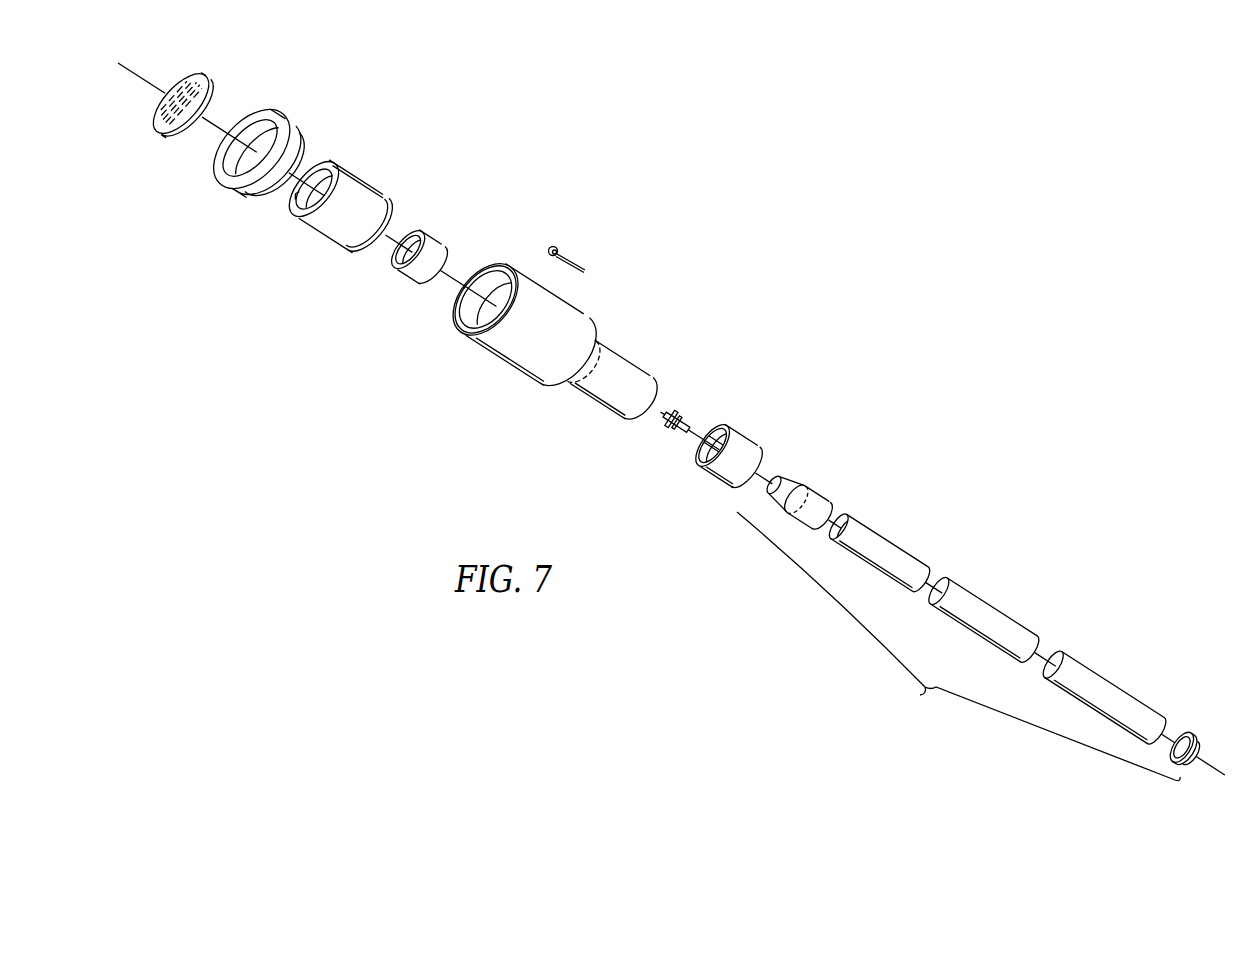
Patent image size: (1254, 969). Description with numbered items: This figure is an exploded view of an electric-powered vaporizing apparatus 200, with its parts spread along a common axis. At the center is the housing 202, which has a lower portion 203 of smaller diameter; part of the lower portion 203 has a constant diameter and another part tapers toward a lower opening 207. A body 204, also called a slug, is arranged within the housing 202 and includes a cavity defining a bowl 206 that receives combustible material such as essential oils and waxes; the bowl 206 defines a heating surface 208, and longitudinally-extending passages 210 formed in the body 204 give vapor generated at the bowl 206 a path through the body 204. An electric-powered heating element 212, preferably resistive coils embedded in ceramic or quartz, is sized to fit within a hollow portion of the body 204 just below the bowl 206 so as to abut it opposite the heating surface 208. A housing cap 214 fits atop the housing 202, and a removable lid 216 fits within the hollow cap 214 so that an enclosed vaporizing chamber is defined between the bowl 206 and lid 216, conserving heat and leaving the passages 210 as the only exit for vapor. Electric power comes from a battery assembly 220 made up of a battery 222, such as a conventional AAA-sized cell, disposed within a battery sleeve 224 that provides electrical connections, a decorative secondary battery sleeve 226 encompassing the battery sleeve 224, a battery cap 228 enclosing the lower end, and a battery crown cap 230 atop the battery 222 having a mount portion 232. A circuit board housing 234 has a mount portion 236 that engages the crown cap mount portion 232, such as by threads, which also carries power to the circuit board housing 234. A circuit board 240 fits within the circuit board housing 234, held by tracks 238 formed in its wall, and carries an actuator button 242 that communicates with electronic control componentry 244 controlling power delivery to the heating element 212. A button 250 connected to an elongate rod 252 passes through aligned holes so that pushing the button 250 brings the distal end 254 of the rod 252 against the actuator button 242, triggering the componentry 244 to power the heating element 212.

The vaporizing apparatus 200 is at (896, 260).
The housing 202 is at (542, 361).
The lower portion 203 is at (492, 354).
The body 204 is at (327, 193).
The bowl 206 is at (311, 203).
The lower opening 207 is at (646, 425).
The heating surface 208 is at (333, 177).
The passages 210 is at (297, 204).
The heating element 212 is at (440, 245).
The housing cap 214 is at (284, 120).
The lid 216 is at (206, 79).
The battery assembly 220 is at (976, 645).
The battery 222 is at (894, 550).
The battery sleeve 224 is at (985, 609).
The secondary battery sleeve 226 is at (1103, 682).
The battery cap 228 is at (1200, 745).
The battery crown cap 230 is at (818, 485).
The mount portion 232 is at (781, 478).
The circuit board housing 234 is at (748, 443).
The mount portion 236 is at (746, 480).
The tracks 238 is at (752, 439).
The circuit board 240 is at (696, 421).
The actuator button 242 is at (705, 417).
The electronic control componentry 244 is at (684, 432).
The button 250 is at (602, 235).
The elongate rod 252 is at (566, 256).
The distal end 254 is at (584, 269).